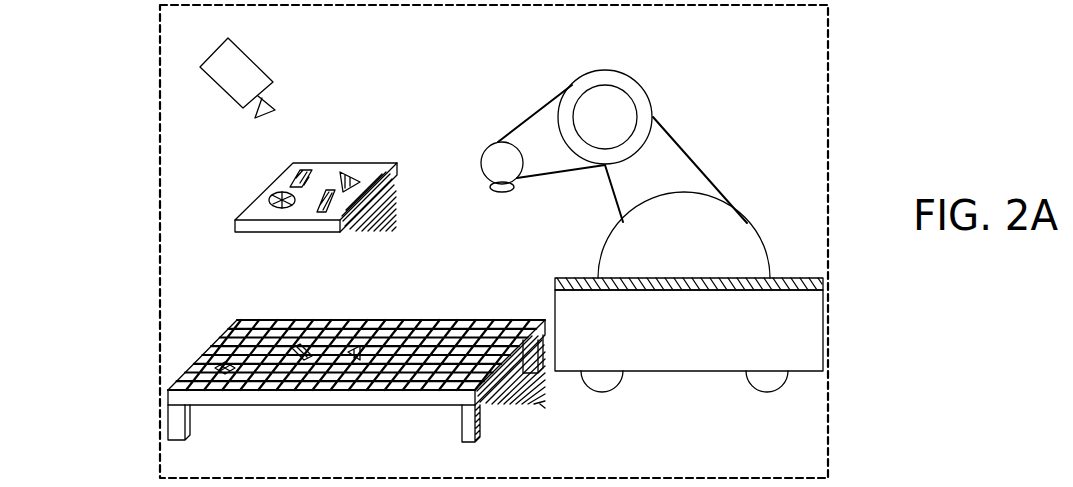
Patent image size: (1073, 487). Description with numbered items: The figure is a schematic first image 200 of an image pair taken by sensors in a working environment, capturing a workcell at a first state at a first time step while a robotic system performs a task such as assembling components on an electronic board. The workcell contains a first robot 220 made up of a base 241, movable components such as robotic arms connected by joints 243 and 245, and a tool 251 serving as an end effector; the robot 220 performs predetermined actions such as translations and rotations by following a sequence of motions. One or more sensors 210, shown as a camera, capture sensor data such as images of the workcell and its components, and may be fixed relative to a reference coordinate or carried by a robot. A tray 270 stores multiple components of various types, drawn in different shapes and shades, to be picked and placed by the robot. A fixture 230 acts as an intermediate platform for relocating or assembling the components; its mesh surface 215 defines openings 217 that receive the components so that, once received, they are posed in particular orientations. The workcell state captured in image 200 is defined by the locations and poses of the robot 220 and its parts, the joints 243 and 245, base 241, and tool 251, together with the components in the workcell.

The first image 200 is at (158, 97).
The sensor 210 is at (259, 64).
The grid 215 is at (295, 320).
The openings 217 is at (430, 340).
The first robot 220 is at (631, 212).
The fixture 230 is at (389, 357).
The base 241 is at (689, 292).
The joint 243 is at (500, 164).
The joint 245 is at (605, 117).
The tool 251 is at (502, 191).
The tray 270 is at (328, 162).